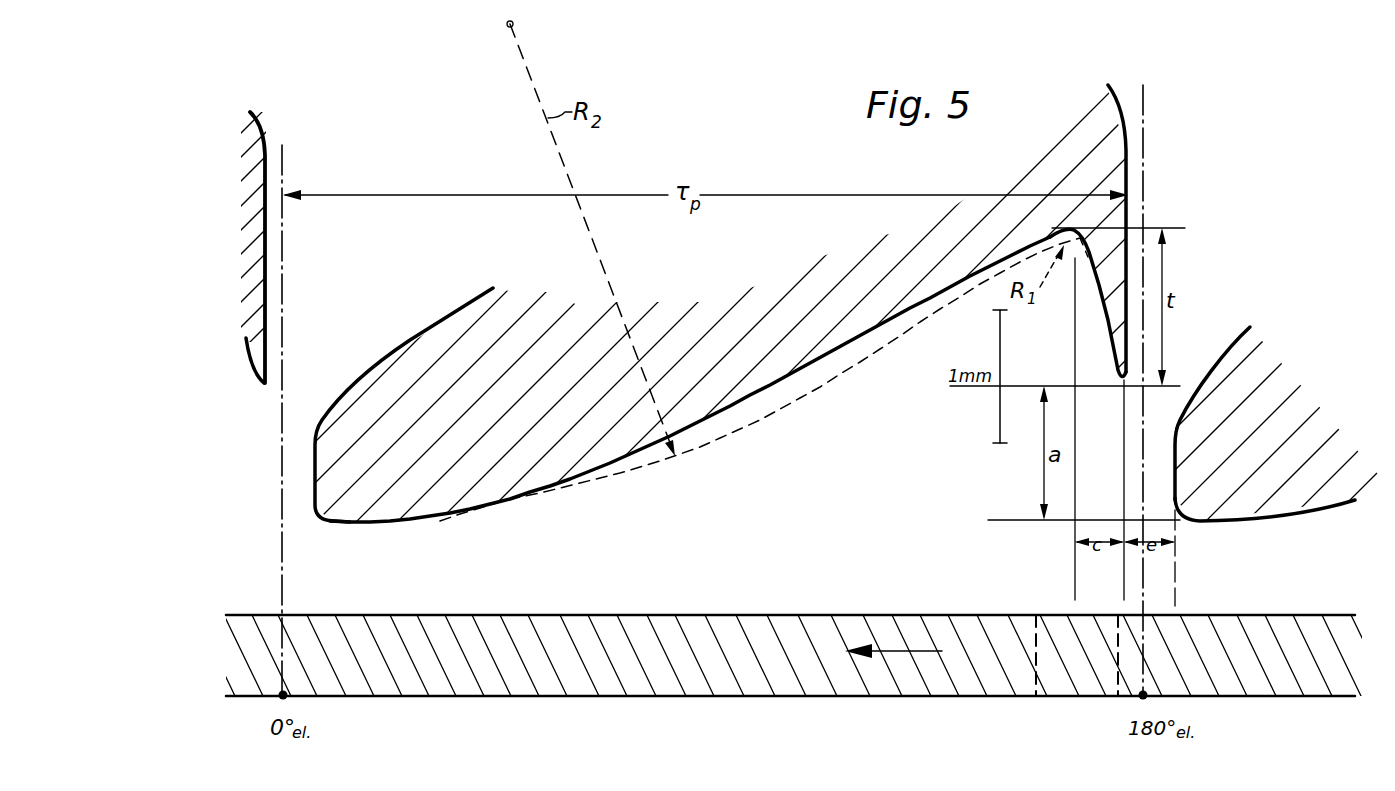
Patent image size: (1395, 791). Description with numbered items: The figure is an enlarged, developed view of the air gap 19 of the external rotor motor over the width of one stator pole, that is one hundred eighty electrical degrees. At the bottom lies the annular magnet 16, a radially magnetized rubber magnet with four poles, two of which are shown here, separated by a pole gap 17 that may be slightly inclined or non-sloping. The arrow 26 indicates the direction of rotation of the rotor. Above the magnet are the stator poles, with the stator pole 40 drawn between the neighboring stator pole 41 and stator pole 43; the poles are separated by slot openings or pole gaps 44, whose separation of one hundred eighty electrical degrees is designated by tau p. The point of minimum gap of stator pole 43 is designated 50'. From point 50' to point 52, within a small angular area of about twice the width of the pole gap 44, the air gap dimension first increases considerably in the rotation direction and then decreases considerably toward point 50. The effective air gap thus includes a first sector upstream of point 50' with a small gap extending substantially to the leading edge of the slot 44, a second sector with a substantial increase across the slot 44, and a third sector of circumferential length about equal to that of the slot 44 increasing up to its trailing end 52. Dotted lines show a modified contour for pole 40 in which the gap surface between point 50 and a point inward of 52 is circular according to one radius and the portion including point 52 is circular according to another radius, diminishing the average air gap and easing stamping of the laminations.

The annular magnet 16 is at (760, 626).
The pole gap 17 is at (1075, 638).
The air gap 19 is at (826, 524).
The arrow 26 is at (905, 651).
The stator pole 40 is at (655, 430).
The stator pole 41 is at (242, 278).
The stator pole 43 is at (1296, 448).
The pole gap 44 is at (297, 404).
The point 50 is at (404, 445).
The point of minimum gap 50' is at (1262, 543).
The point 52 is at (1068, 248).